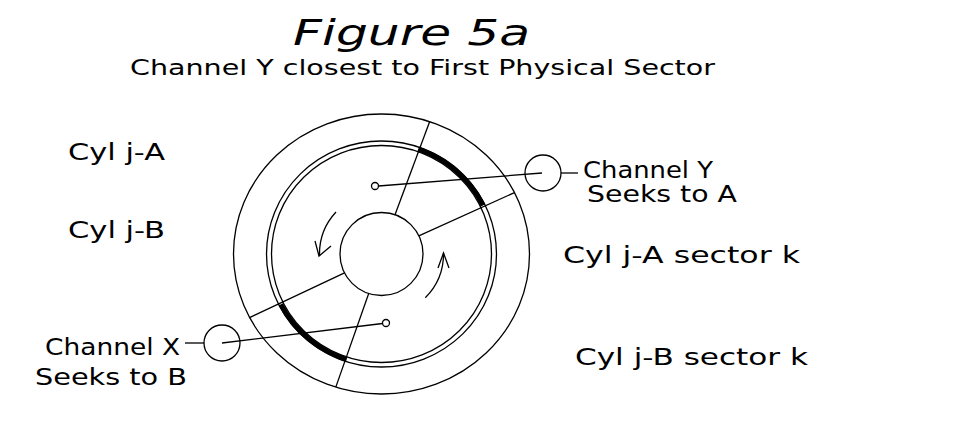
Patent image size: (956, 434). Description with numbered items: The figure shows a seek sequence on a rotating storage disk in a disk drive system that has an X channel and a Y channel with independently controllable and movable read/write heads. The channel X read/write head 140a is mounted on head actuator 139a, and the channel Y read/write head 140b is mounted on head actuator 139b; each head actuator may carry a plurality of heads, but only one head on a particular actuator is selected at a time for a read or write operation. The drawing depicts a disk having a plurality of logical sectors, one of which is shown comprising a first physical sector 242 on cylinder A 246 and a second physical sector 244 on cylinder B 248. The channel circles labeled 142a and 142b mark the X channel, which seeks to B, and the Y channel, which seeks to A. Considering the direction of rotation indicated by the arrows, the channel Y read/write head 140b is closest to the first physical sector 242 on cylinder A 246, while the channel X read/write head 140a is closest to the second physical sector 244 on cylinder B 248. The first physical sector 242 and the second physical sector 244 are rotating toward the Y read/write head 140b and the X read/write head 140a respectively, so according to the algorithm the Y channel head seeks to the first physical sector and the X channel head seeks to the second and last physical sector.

The channel X read/write head 140a is at (395, 328).
The channel Y read/write head 140b is at (372, 183).
The head actuator 139a is at (288, 338).
The head actuator 139b is at (432, 177).
The channel X 142a is at (205, 327).
The channel Y 142b is at (521, 160).
The cylinder A 246 is at (273, 212).
The cylinder B 248 is at (273, 232).
The first physical sector 242 is at (493, 270).
The second physical sector 244 is at (393, 317).